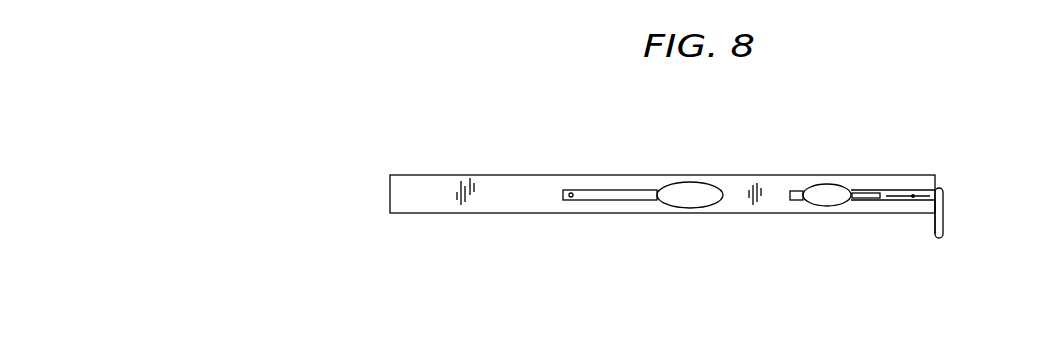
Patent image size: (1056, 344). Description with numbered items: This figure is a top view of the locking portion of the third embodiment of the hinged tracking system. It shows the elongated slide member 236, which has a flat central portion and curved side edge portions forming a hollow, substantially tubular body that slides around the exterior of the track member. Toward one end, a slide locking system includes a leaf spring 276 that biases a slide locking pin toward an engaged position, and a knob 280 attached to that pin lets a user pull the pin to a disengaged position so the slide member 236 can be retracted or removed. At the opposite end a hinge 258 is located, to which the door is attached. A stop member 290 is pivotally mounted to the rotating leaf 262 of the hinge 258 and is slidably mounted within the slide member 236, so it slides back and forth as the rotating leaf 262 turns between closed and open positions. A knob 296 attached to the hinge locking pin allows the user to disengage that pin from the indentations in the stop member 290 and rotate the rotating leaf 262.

The slide member 236 is at (738, 190).
The leaf spring 276 is at (610, 192).
The knob 280 is at (679, 208).
The knob 296 is at (826, 200).
The stop member 290 is at (924, 200).
The hinge 258 is at (938, 187).
The rotating leaf 262 is at (940, 222).